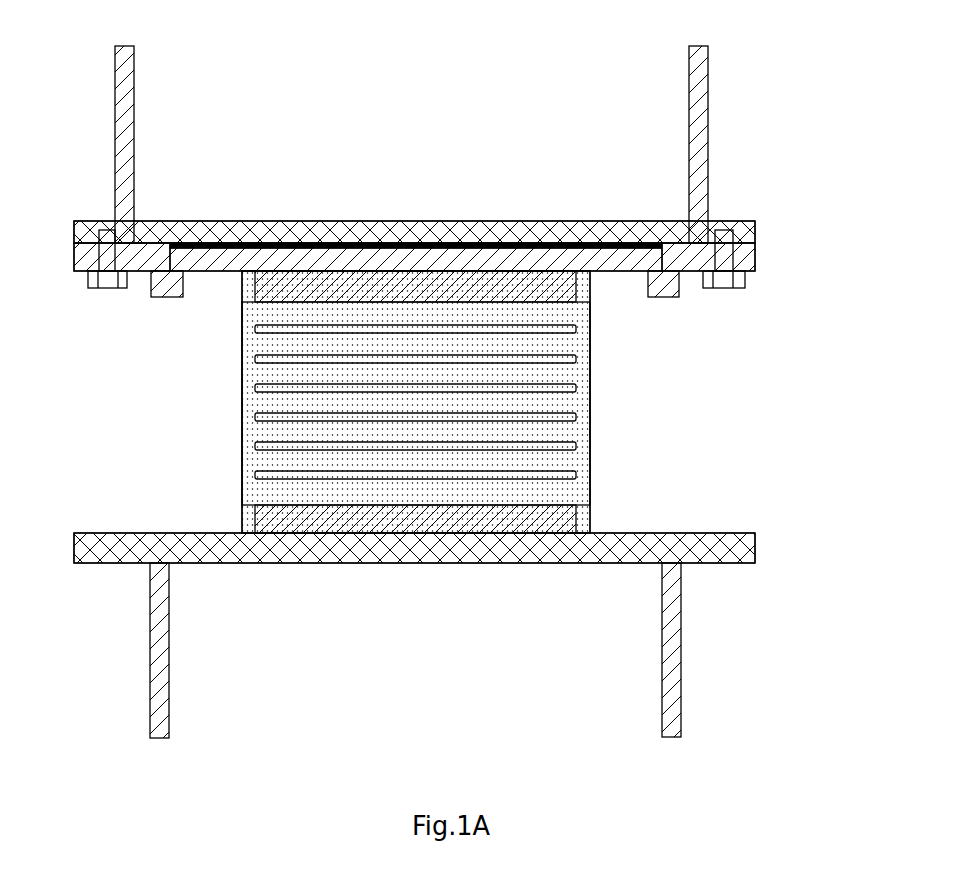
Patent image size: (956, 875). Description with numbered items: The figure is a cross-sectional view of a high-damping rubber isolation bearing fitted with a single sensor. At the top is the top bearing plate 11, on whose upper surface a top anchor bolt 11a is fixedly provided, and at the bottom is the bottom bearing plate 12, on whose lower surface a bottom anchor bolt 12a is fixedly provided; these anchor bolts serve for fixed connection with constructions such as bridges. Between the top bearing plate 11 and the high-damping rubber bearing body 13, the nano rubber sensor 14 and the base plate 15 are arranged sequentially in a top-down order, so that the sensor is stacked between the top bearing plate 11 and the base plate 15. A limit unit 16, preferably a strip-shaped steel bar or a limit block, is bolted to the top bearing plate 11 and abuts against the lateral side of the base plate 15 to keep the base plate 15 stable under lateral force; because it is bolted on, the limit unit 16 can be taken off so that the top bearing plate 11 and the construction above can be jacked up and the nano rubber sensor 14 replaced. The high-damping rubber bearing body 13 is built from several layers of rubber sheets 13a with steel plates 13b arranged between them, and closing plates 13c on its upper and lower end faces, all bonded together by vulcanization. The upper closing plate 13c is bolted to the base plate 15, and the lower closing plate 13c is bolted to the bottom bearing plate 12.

The top bearing plate 11 is at (433, 222).
The top anchor bolt 11a is at (125, 119).
The bottom bearing plate 12 is at (393, 553).
The bottom anchor bolt 12a is at (672, 655).
The high-damping rubber bearing body 13 is at (429, 402).
The rubber sheets 13a is at (565, 430).
The steel plates 13b is at (273, 388).
The closing plates 13c is at (275, 287).
The nano rubber sensor 14 is at (252, 240).
The base plate 15 is at (595, 265).
The limit unit 16 is at (745, 285).